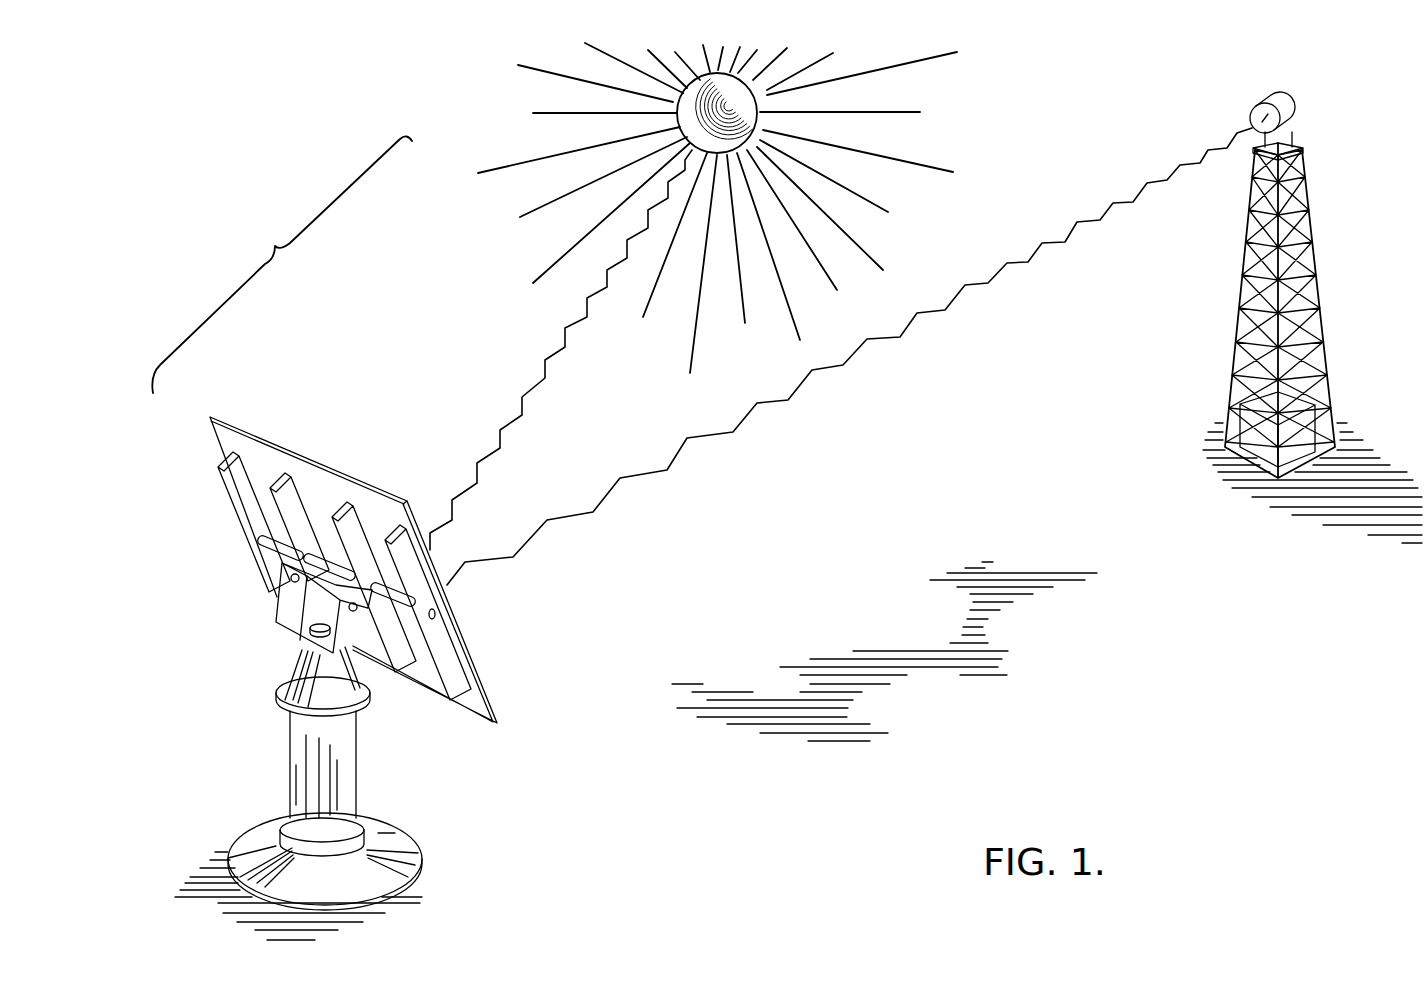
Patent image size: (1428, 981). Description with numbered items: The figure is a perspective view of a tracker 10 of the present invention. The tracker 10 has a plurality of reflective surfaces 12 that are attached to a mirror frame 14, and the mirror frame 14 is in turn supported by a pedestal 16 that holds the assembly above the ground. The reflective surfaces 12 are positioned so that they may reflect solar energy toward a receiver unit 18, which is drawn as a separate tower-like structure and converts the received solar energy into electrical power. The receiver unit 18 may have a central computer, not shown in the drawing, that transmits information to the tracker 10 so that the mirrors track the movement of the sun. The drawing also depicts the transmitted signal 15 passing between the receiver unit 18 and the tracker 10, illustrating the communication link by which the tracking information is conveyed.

The tracker 10 is at (550, 764).
The reflective surfaces 12 is at (473, 650).
The mirror frame 14 is at (273, 552).
The transmitted signal 15 is at (908, 325).
The pedestal 16 is at (350, 767).
The receiver unit 18 is at (1293, 107).